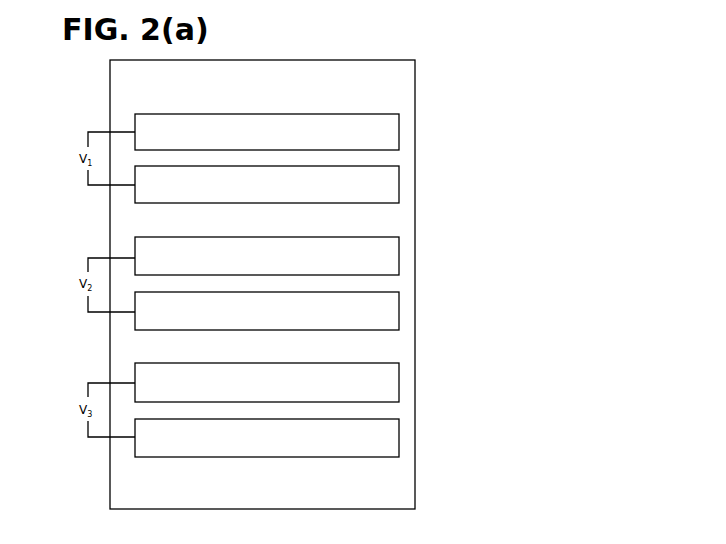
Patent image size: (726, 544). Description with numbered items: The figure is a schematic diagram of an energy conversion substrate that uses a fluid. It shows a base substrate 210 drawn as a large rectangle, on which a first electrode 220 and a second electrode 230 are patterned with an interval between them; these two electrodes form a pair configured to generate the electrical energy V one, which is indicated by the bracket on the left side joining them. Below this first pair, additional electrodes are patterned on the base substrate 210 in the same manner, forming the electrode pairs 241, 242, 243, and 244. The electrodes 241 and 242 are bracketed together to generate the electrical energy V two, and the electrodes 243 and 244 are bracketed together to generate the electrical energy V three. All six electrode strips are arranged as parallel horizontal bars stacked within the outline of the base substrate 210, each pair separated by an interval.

The base substrate 210 is at (416, 77).
The first electrode 220 is at (400, 132).
The second electrode 230 is at (400, 189).
The electrode pair 241 is at (400, 256).
The electrode pair 242 is at (400, 315).
The electrode pair 243 is at (400, 380).
The electrode pair 244 is at (400, 439).